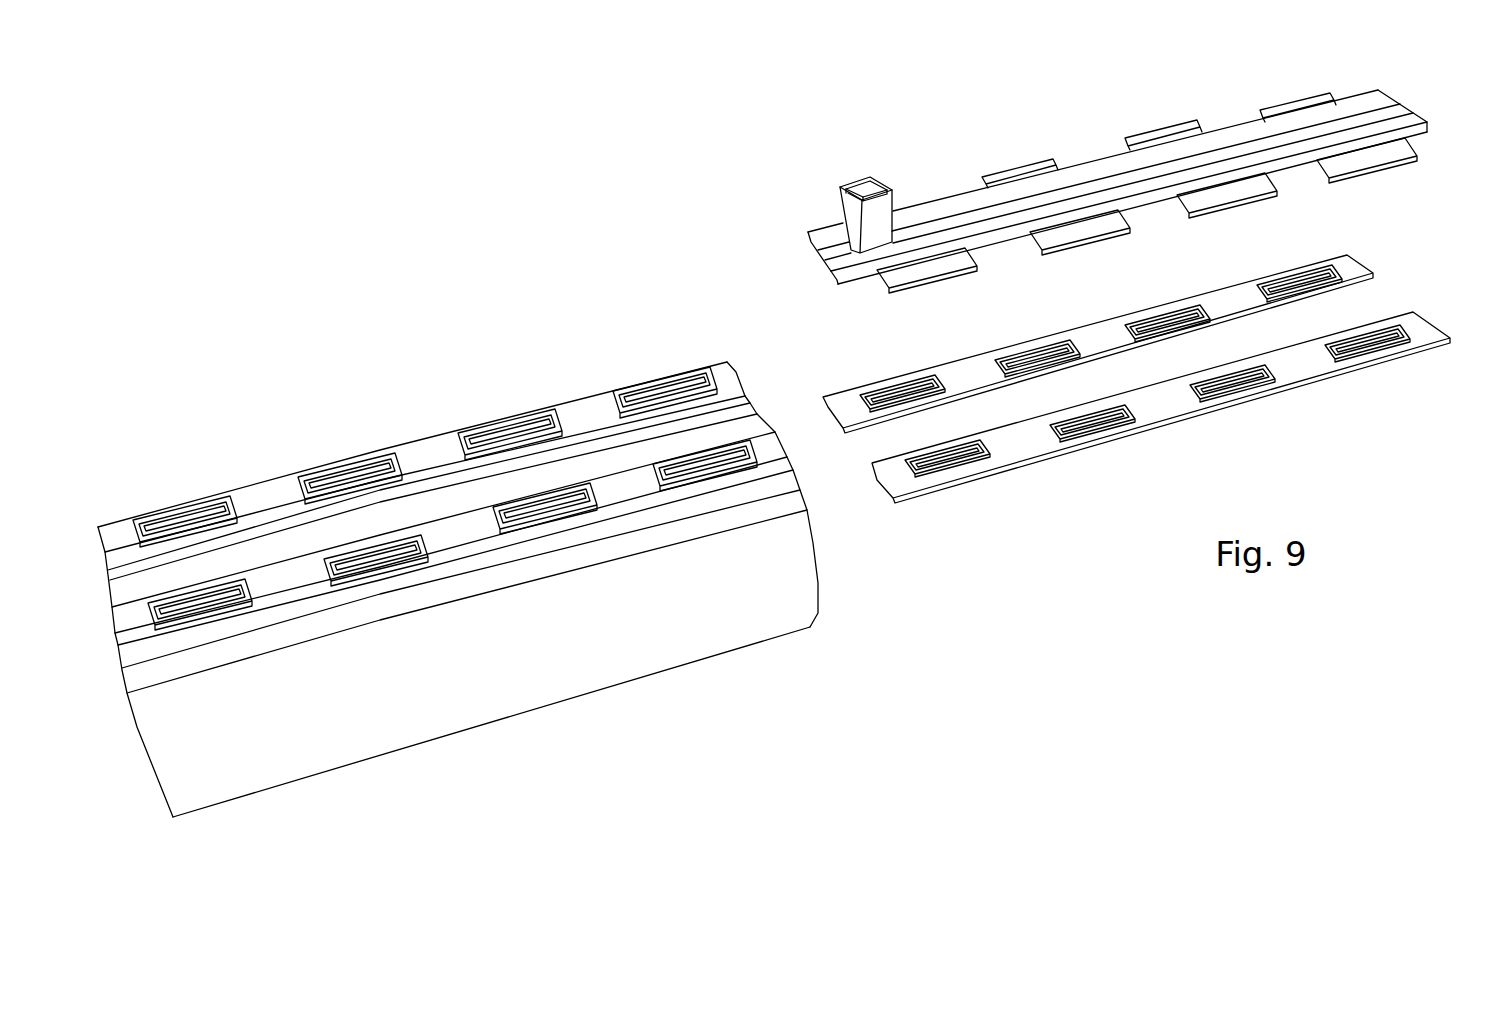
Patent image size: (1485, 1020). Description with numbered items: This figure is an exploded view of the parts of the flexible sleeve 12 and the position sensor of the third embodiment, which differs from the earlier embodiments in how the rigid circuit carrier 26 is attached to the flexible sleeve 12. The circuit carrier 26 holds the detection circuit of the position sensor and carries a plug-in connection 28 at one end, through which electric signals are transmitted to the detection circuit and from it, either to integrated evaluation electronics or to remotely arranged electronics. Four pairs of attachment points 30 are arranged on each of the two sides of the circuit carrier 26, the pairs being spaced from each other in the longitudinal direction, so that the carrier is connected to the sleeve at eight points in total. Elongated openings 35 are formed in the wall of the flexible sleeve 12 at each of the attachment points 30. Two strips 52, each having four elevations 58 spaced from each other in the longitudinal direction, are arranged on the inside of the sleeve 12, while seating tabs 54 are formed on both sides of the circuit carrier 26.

The flexible sleeve 12 is at (657, 660).
The circuit carrier 26 is at (1074, 175).
The plug-in connection 28 is at (858, 192).
The attachment points 30 is at (330, 462).
The elongated openings 35 is at (203, 603).
The strips 52 is at (1372, 268).
The seating tabs 54 is at (1268, 100).
The elevations 58 is at (1240, 373).